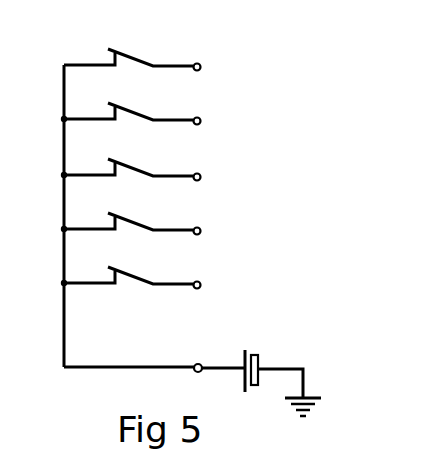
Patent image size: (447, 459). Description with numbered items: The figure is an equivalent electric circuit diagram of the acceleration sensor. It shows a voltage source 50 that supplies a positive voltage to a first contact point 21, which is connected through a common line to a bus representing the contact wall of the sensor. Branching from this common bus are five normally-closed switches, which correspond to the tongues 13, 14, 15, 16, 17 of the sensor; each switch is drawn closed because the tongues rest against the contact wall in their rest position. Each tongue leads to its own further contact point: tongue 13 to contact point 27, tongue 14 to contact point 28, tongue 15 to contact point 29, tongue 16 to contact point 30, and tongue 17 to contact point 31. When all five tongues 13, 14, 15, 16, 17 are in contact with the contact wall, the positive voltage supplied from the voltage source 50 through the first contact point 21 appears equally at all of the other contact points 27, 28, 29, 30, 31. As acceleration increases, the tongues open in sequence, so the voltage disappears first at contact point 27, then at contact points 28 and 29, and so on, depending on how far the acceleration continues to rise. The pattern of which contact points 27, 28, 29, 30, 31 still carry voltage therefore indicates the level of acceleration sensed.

The tongue 13 is at (120, 271).
The tongue 14 is at (120, 218).
The tongue 15 is at (120, 161).
The tongue 16 is at (122, 107).
The tongue 17 is at (120, 53).
The first contact point 21 is at (198, 363).
The contact point 27 is at (201, 282).
The contact point 28 is at (201, 228).
The contact point 29 is at (201, 174).
The contact point 30 is at (201, 118).
The contact point 31 is at (201, 64).
The voltage source 50 is at (255, 352).